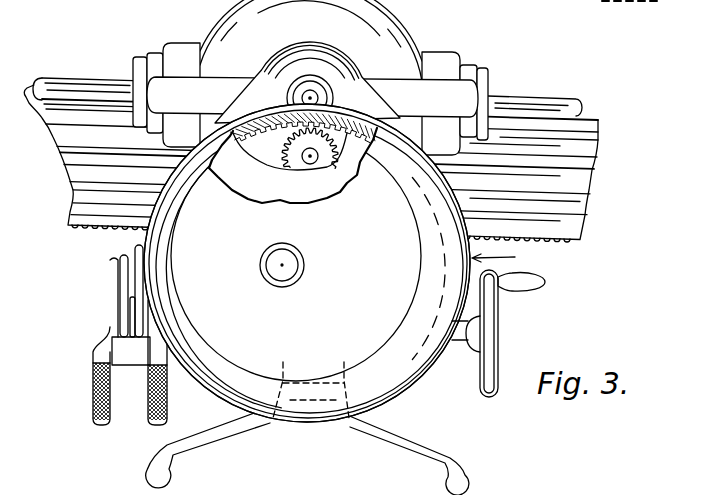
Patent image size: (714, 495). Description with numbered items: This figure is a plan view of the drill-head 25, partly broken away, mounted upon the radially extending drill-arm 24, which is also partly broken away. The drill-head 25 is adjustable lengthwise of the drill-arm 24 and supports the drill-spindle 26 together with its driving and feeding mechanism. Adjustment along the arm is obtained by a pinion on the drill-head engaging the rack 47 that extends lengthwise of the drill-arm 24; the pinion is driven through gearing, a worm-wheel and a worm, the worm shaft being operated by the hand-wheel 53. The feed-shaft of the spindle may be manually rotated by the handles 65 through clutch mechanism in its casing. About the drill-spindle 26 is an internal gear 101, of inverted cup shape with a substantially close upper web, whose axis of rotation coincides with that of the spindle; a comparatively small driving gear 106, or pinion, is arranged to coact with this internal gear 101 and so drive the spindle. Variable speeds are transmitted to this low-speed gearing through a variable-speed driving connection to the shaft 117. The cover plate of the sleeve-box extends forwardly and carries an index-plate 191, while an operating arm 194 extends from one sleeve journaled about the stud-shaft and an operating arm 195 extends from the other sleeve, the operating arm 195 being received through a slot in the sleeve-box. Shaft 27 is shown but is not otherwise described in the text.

The drill-arm 24 is at (592, 118).
The drill-head 25 is at (509, 262).
The drill-spindle 26 is at (288, 273).
The shaft 27 is at (562, 97).
The rack 47 is at (577, 245).
The hand-wheel 53 is at (498, 310).
The handles 65 is at (358, 433).
The internal gear 101 is at (227, 170).
The driving gear 106 is at (291, 152).
The shaft 117 is at (322, 93).
The index-plate 191 is at (130, 365).
The operating arm 194 is at (98, 428).
The operating arm 195 is at (160, 424).